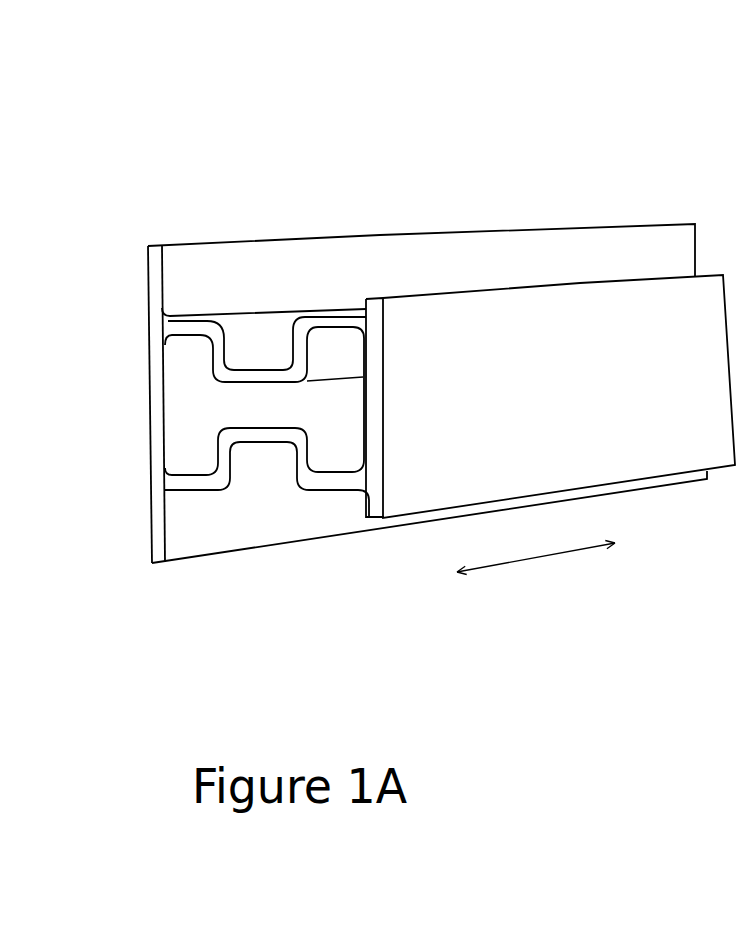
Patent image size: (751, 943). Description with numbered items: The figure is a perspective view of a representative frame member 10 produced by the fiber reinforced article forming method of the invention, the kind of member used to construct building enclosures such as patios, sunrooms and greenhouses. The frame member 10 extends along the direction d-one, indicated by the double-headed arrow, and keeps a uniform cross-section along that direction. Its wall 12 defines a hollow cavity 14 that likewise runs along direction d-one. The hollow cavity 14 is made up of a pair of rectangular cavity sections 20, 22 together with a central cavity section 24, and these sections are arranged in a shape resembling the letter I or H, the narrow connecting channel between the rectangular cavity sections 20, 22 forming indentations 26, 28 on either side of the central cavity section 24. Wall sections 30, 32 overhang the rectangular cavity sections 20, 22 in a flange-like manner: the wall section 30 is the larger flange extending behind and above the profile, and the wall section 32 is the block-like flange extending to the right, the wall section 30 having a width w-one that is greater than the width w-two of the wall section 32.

The frame member 10 is at (487, 135).
The wall 12 is at (153, 377).
The hollow cavity 14 is at (277, 408).
The rectangular cavity section 20 is at (190, 383).
The rectangular cavity section 22 is at (340, 407).
The central cavity section 24 is at (258, 397).
The indentation 26 is at (280, 377).
The indentation 28 is at (282, 443).
The wall section 30 is at (483, 253).
The wall section 32 is at (610, 470).